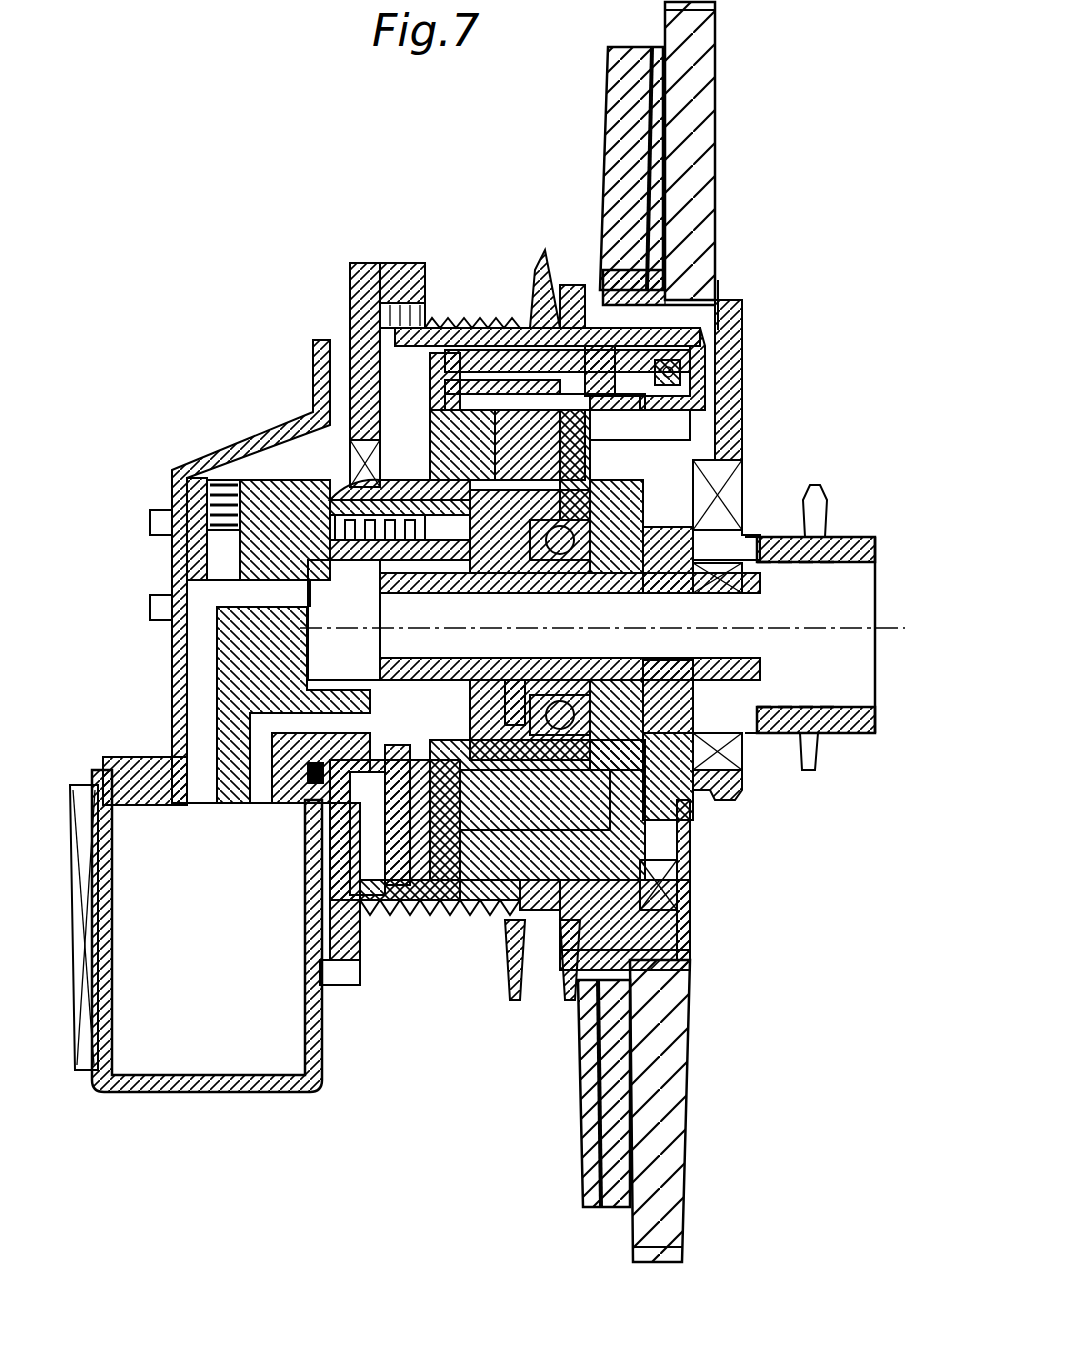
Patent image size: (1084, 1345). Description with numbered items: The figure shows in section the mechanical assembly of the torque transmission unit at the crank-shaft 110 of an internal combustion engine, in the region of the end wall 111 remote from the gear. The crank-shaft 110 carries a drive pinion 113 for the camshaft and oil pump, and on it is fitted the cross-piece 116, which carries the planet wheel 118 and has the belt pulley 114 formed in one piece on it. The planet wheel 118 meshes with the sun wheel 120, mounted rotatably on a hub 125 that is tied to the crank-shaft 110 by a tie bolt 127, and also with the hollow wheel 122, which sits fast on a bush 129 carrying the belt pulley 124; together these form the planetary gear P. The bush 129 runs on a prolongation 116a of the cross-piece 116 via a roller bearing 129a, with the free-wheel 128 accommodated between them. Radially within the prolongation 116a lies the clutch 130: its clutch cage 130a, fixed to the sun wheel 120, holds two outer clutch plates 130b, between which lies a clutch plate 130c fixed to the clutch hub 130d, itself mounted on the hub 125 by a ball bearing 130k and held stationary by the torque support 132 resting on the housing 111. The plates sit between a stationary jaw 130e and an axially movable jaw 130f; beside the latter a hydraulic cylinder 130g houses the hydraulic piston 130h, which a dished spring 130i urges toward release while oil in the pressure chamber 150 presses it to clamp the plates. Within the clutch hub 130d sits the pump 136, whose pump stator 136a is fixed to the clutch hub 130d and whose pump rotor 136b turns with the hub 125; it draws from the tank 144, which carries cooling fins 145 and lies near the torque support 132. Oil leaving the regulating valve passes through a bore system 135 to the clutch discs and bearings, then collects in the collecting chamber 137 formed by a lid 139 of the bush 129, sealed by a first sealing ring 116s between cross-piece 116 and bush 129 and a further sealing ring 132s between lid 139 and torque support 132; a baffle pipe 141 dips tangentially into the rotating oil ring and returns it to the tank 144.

The crank-shaft 110 is at (845, 575).
The end wall 111 is at (722, 793).
The drive pinion 113 is at (815, 495).
The belt pulley 114 is at (535, 300).
The cross-piece 116 is at (700, 355).
The prolongation 116a is at (450, 918).
The first sealing ring 116s is at (682, 372).
The planet wheel 118 is at (690, 405).
The sun wheel 120 is at (668, 745).
The hollow wheel 122 is at (598, 345).
The belt pulley 124 is at (400, 315).
The hub 125 is at (735, 752).
The tie bolt 127 is at (720, 538).
The free-wheel 128 is at (560, 950).
The bush 129 is at (465, 335).
The roller bearing 129a is at (480, 920).
The clutch 130 is at (690, 868).
The clutch cage 130a is at (505, 912).
The outer clutch plates 130b is at (512, 350).
The clutch plate 130c is at (528, 575).
The clutch hub 130d is at (600, 700).
The stationary jaw 130e is at (572, 300).
The movable jaw 130f is at (470, 348).
The hydraulic cylinder 130g is at (435, 470).
The hydraulic piston 130h is at (395, 800).
The dished spring 130i is at (430, 395).
The ball bearing 130k is at (575, 560).
The torque support 132 is at (180, 465).
The further sealing ring 132s is at (315, 775).
The bore system 135 is at (370, 710).
The pump 136 is at (380, 660).
The pump stator 136a is at (480, 595).
The pump rotor 136b is at (525, 690).
The collecting chamber 137 is at (365, 875).
The lid 139 is at (355, 280).
The baffle pipe 141 is at (370, 960).
The tank 144 is at (140, 1065).
The cooling fins 145 is at (82, 1068).
The pressure chamber 150 is at (375, 478).
The planetary gear P is at (726, 294).